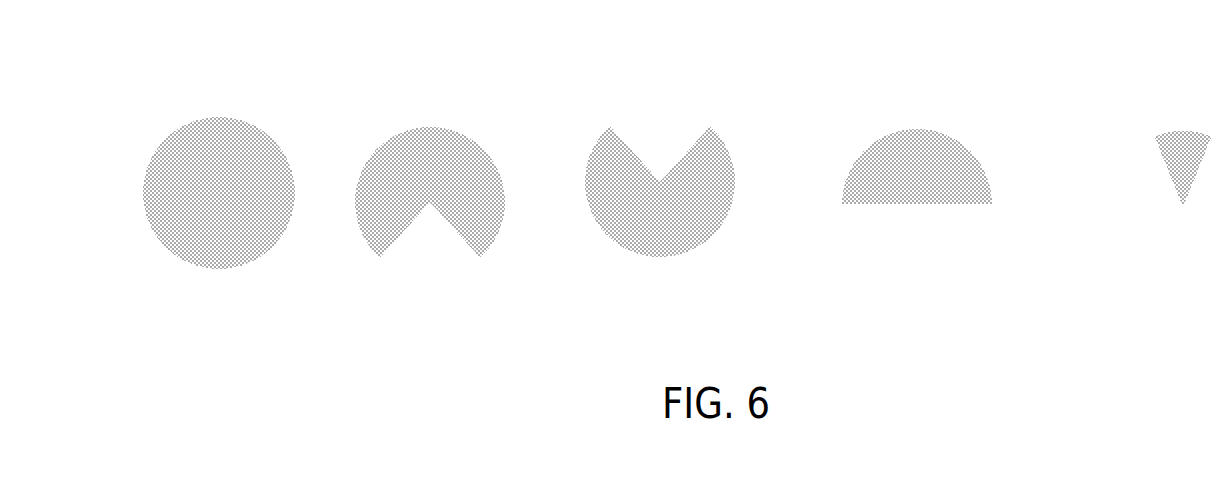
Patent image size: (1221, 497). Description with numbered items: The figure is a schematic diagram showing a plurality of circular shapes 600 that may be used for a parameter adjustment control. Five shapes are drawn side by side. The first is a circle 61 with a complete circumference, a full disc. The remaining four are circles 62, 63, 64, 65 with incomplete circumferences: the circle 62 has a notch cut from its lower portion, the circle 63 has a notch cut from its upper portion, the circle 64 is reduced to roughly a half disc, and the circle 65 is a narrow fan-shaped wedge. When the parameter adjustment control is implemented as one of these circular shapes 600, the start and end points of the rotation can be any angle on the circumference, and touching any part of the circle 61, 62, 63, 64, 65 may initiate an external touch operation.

The circular shapes 600 is at (228, 62).
The circle with a complete circumference 61 is at (202, 260).
The circle with incomplete circumference 62 is at (372, 245).
The circle with incomplete circumference 63 is at (620, 243).
The circle with incomplete circumference 64 is at (910, 202).
The circle with incomplete circumference 65 is at (1172, 182).